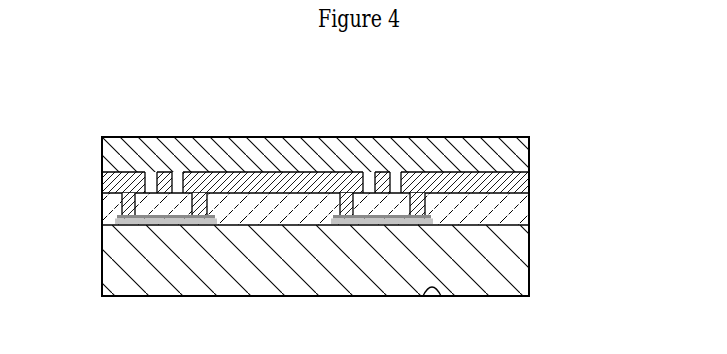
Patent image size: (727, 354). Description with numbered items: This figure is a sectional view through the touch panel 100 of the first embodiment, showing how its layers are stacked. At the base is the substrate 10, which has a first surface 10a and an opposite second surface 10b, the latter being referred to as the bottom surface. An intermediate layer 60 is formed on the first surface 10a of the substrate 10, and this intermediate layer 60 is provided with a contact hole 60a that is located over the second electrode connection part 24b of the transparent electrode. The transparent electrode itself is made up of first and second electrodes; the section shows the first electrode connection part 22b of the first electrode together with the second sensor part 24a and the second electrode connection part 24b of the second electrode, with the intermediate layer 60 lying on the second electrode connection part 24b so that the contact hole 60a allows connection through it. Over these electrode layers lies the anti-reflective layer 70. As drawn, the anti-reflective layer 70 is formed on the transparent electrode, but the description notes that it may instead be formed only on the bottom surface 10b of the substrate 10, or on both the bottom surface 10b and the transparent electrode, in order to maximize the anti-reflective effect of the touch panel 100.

The touch panel 100 is at (113, 86).
The substrate 10 is at (523, 260).
The first surface 10a is at (478, 226).
The second surface 10b is at (443, 294).
The first electrode connection part 22b is at (159, 176).
The second sensor part 24a is at (257, 172).
The second electrode connection part 24b is at (363, 215).
The intermediate layer 60 is at (520, 210).
The contact hole 60a is at (418, 215).
The anti-reflective layer 70 is at (483, 143).